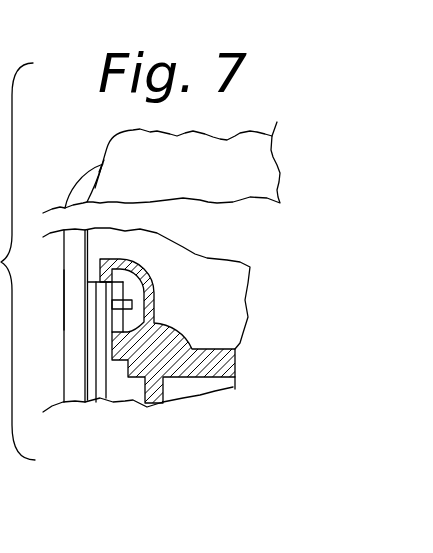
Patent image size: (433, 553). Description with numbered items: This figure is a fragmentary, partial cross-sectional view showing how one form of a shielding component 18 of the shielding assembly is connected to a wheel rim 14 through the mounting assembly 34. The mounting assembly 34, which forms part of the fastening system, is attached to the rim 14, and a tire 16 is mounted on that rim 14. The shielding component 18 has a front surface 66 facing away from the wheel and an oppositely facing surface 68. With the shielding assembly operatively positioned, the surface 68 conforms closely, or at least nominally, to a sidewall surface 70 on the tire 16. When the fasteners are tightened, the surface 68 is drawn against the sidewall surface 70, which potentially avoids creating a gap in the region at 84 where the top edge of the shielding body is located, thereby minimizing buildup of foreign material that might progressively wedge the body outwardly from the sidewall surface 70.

The rim 14 is at (198, 359).
The tire 16 is at (205, 177).
The shielding component 18 is at (63, 310).
The mounting assembly 34 is at (106, 377).
The front surface 66 is at (61, 296).
The surface 68 is at (87, 253).
The sidewall surface 70 is at (101, 170).
The region 84 is at (95, 154).